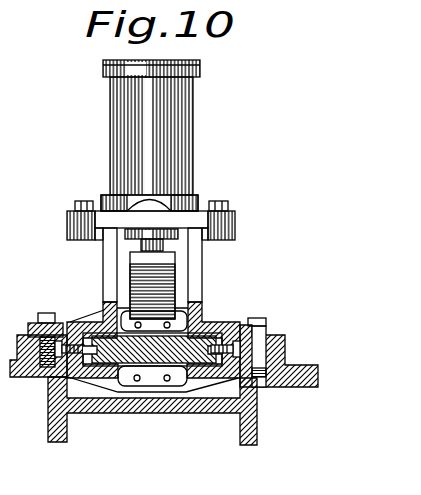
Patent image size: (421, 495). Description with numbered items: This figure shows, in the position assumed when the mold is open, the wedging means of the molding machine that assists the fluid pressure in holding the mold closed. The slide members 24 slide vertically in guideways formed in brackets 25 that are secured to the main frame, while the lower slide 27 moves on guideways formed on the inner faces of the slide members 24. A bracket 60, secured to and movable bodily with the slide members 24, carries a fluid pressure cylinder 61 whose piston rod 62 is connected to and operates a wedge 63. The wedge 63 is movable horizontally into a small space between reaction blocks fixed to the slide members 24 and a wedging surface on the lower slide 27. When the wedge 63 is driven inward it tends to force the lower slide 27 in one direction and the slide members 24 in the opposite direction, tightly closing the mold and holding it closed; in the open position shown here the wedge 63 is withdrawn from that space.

The slide members 24 is at (201, 322).
The brackets 25 is at (258, 430).
The lower slide 27 is at (167, 350).
The bracket 60 is at (204, 281).
The fluid pressure cylinder 61 is at (191, 149).
The piston rod 62 is at (141, 244).
The wedge 63 is at (131, 276).